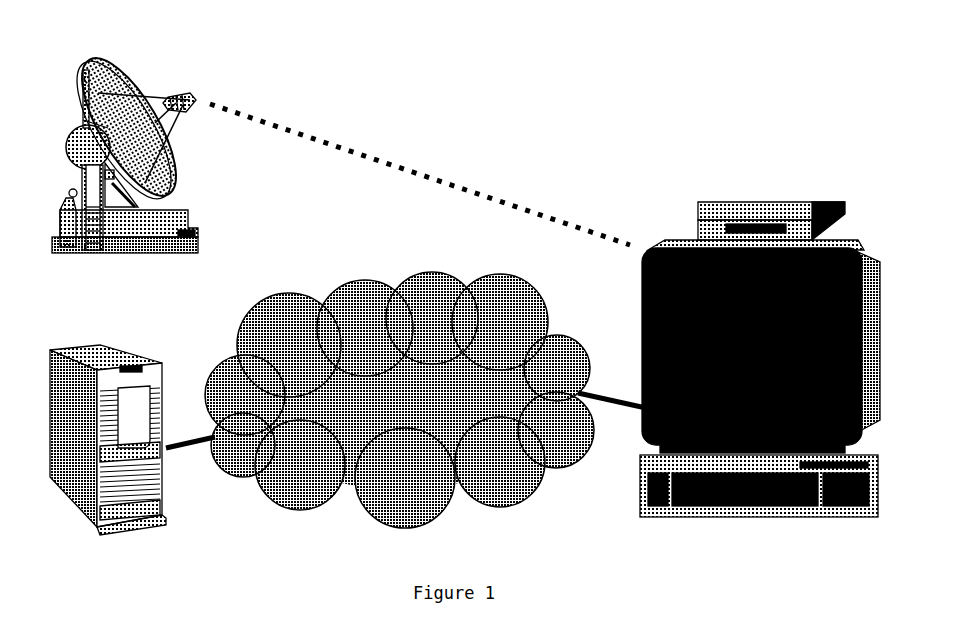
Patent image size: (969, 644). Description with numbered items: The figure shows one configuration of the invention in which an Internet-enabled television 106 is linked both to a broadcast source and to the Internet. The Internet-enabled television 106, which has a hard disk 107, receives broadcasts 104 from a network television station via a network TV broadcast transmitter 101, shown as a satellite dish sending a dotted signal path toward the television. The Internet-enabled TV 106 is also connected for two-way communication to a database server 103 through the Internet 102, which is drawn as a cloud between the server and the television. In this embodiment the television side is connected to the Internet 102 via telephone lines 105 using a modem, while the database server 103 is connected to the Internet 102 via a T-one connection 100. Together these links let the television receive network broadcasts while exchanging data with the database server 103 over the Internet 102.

The T-1 connection 100 is at (172, 435).
The network TV broadcast transmitter 101 is at (123, 82).
The Internet 102 is at (427, 303).
The database server 103 is at (132, 494).
The broadcasts 104 is at (400, 163).
The telephone lines 105 is at (600, 417).
The Internet-enabled television 106 is at (733, 218).
The hard disk 107 is at (768, 290).